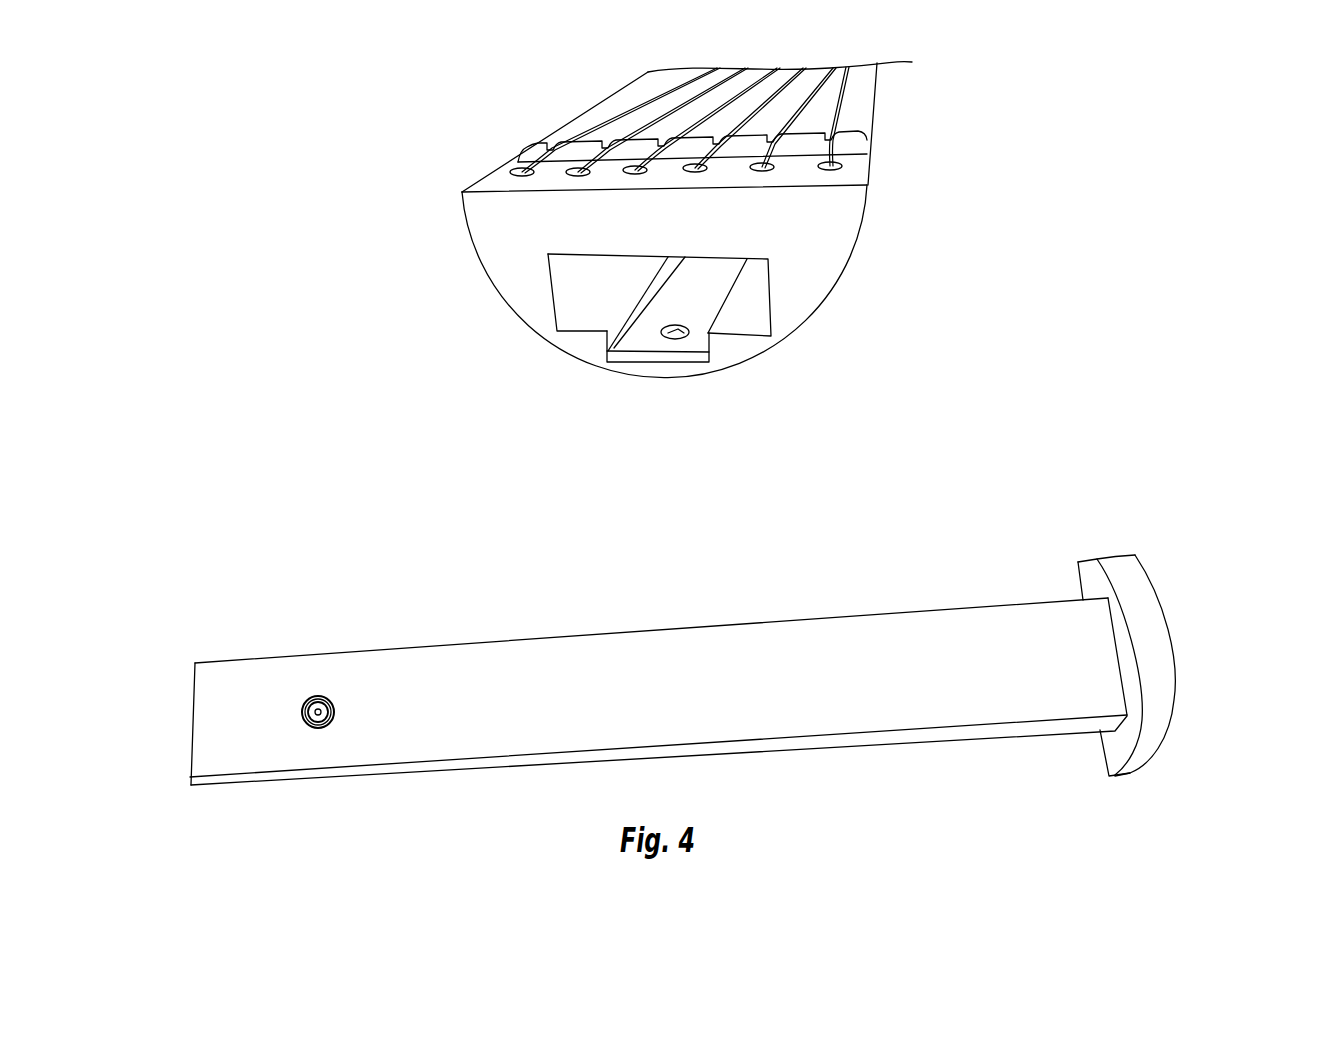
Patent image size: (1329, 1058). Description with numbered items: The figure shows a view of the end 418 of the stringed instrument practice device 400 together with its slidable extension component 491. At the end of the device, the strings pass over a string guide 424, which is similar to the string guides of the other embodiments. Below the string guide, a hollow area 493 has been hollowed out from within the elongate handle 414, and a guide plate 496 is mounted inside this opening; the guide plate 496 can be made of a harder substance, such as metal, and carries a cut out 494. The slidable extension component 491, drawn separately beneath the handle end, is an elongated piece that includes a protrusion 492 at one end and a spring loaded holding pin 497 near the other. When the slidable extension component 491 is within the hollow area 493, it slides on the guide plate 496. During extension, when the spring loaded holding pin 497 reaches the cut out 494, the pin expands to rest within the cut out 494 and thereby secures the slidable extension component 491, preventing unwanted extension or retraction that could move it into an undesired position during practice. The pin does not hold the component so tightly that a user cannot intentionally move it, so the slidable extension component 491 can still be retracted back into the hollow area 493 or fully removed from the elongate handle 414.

The stringed instrument practice device 400 is at (466, 112).
The elongate handle 414 is at (856, 235).
The end 418 is at (507, 258).
The string guide 424 is at (860, 135).
The slidable extension component 491 is at (1157, 548).
The protrusion 492 is at (1158, 632).
The hollow area 493 is at (773, 256).
The cut out 494 is at (688, 325).
The guide plate 496 is at (647, 345).
The spring loaded holding pin 497 is at (318, 722).